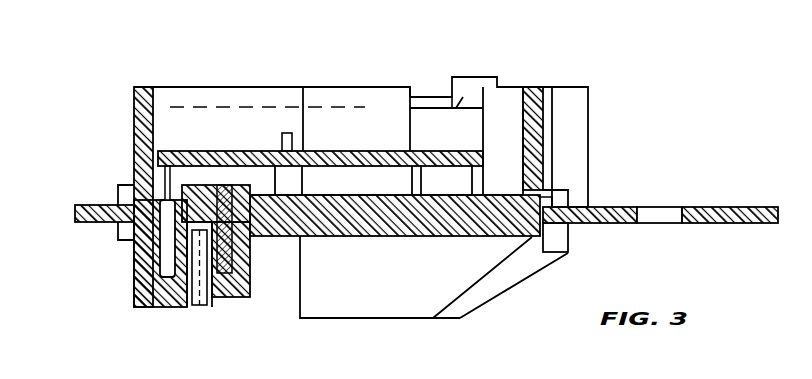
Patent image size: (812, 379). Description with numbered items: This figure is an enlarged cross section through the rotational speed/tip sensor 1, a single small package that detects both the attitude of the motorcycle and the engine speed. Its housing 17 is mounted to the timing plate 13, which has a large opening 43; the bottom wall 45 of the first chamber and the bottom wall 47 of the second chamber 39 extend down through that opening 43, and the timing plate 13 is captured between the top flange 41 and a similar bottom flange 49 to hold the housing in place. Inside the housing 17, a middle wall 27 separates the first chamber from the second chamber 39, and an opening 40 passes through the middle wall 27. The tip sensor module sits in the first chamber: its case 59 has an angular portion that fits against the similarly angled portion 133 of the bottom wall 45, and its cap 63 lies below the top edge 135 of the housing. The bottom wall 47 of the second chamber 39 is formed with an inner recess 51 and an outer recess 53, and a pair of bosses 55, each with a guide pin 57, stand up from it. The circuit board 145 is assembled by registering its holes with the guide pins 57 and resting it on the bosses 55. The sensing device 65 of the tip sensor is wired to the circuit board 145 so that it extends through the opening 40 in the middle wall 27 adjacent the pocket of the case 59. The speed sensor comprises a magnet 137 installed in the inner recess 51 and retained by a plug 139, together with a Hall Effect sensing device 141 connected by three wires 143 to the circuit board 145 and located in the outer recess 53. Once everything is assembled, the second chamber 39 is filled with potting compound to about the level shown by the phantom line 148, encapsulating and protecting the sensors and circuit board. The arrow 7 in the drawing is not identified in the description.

The rotational speed/tip sensor 1 is at (630, 94).
The slot / insertion direction 7 is at (196, 313).
The timing plate 13 is at (75, 209).
The housing 17 is at (368, 80).
The middle wall 27 is at (327, 118).
The second chamber 39 is at (155, 120).
The opening 40 is at (413, 120).
The top flange 41 is at (118, 194).
The opening 43 is at (567, 198).
The bottom wall 45 is at (368, 313).
The bottom wall 47 is at (408, 229).
The bottom flange 49 is at (118, 231).
The inner recess 51 is at (230, 226).
The outer recess 53 is at (156, 262).
The bosses 55 is at (295, 181).
The guide pin 57 is at (283, 139).
The case 59 is at (457, 107).
The cap 63 is at (428, 78).
The sensing device 65 is at (463, 183).
The angled portion 133 is at (528, 275).
The top edge 135 is at (515, 87).
The magnet 137 is at (223, 276).
The plug 139 is at (288, 238).
The Hall Effect sensing device 141 is at (138, 296).
The wires 143 is at (160, 180).
The circuit board 145 is at (387, 157).
The phantom line 148 is at (242, 107).